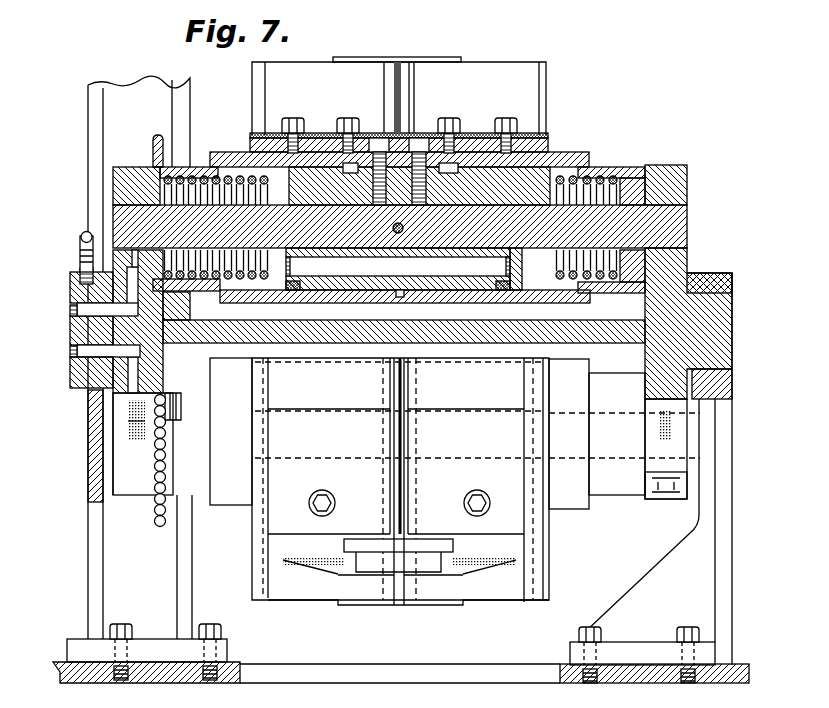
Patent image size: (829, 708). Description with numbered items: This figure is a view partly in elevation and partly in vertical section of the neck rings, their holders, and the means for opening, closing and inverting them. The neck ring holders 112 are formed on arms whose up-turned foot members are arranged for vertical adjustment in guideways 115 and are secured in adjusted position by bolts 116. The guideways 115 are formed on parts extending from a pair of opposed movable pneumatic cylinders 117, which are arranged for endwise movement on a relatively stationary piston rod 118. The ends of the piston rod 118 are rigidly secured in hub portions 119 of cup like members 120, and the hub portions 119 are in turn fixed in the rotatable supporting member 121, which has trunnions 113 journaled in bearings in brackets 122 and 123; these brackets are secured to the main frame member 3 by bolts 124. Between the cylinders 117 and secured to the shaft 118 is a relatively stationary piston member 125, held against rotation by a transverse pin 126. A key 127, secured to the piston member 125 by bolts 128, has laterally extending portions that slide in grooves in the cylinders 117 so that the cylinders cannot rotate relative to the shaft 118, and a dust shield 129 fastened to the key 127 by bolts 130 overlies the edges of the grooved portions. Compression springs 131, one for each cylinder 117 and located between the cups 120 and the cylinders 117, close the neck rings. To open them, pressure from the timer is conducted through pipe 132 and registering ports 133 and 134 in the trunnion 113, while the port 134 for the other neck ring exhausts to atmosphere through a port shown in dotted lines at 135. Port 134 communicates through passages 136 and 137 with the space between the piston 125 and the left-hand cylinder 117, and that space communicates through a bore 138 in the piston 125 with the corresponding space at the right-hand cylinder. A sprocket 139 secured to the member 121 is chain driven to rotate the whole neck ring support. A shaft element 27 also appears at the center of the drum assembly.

The main frame member 3 is at (57, 670).
The shaft flange 27 is at (344, 545).
The neck ring holders 112 is at (357, 592).
The trunnions 113 is at (75, 333).
The guideways 115 is at (258, 530).
The bolts 116 is at (322, 500).
The pneumatic cylinders 117 is at (213, 153).
The piston rod 118 is at (672, 220).
The hub portions 119 is at (113, 193).
The cup like members 120 is at (172, 165).
The rotatable supporting member 121 is at (668, 287).
The bracket 122 is at (88, 461).
The bracket 123 is at (717, 376).
The bolts 124 is at (125, 625).
The piston member 125 is at (317, 165).
The transverse pin 126 is at (386, 257).
The key 127 is at (473, 140).
The bolts 128 is at (383, 140).
The dust shield 129 is at (267, 133).
The bolts 130 is at (292, 118).
The compression springs 131 is at (196, 279).
The pipe 132 is at (78, 236).
The port 133 is at (92, 286).
The port 134 is at (90, 304).
The port 135 is at (68, 390).
The passage 136 is at (165, 339).
The passage 137 is at (130, 232).
The bore 138 is at (404, 269).
The sprocket 139 is at (152, 508).